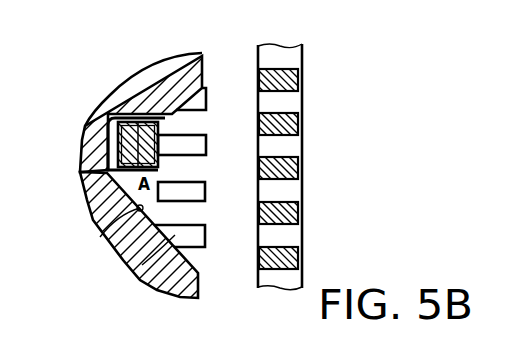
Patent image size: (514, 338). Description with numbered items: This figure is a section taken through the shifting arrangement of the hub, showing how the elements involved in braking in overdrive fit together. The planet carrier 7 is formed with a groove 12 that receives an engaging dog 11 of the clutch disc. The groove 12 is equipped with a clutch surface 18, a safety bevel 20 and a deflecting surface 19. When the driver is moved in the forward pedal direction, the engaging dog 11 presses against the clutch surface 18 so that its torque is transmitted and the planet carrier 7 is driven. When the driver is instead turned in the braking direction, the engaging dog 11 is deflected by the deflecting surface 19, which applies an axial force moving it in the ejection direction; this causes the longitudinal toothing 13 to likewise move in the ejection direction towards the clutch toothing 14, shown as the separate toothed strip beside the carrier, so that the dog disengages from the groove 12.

The planet carrier 7 is at (128, 91).
The engaging dog 11 is at (107, 174).
The groove 12 is at (108, 142).
The longitudinal toothing 13 is at (135, 280).
The clutch toothing 14 is at (302, 212).
The clutch surface 18 is at (143, 120).
The deflecting surface 19 is at (101, 234).
The safety bevel 20 is at (193, 97).